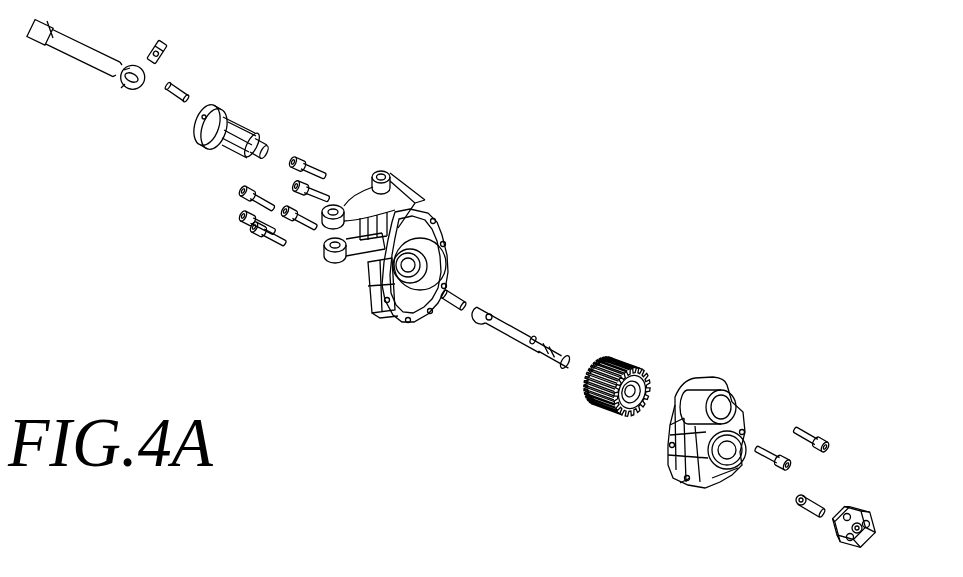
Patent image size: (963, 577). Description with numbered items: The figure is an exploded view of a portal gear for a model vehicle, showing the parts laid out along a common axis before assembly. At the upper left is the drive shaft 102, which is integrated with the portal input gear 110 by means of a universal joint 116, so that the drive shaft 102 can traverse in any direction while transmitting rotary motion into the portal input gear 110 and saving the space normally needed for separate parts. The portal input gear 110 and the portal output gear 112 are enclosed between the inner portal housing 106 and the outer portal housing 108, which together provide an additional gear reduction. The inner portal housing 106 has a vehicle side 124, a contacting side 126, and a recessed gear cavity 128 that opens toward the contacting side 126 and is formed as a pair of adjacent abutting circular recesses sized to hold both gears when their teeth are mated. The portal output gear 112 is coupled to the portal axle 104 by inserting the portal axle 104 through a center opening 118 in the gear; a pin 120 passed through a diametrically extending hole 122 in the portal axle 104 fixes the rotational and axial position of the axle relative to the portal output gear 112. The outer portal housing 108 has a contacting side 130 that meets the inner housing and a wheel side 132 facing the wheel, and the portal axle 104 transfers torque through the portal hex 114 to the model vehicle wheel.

The drive shaft 102 is at (75, 48).
The portal axle 104 is at (517, 331).
The inner portal housing 106 is at (393, 246).
The outer portal housing 108 is at (710, 392).
The portal input gear 110 is at (237, 112).
The portal output gear 112 is at (613, 389).
The portal hex 114 is at (862, 500).
The universal joint 116 is at (146, 112).
The center opening 118 is at (632, 415).
The pin 120 is at (452, 302).
The diametrically extending hole 122 is at (483, 327).
The vehicle side 124 is at (343, 280).
The contacting side 126 is at (450, 219).
The recessed gear cavity 128 is at (415, 280).
The contacting side 130 is at (681, 362).
The wheel side 132 is at (727, 415).